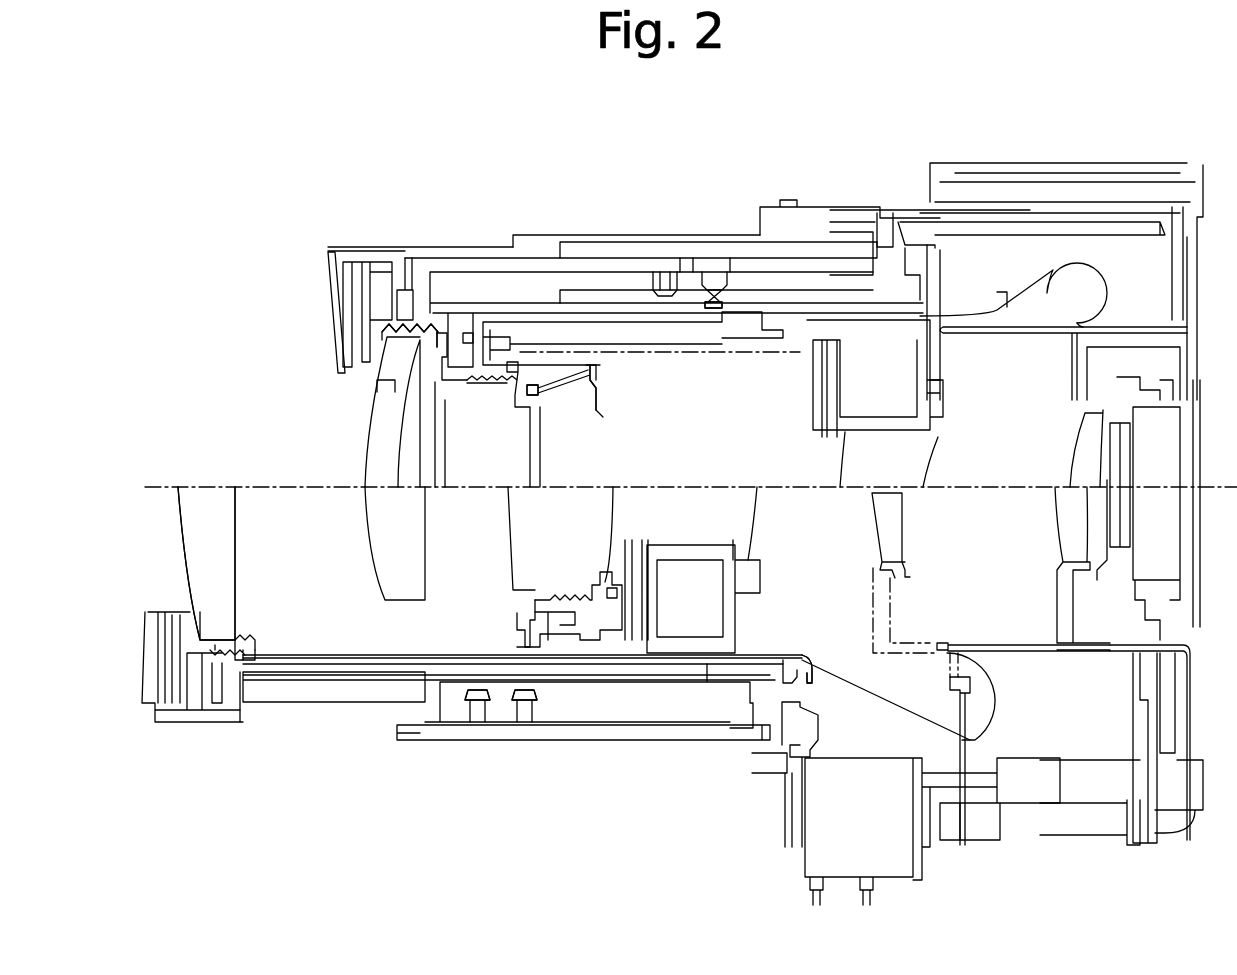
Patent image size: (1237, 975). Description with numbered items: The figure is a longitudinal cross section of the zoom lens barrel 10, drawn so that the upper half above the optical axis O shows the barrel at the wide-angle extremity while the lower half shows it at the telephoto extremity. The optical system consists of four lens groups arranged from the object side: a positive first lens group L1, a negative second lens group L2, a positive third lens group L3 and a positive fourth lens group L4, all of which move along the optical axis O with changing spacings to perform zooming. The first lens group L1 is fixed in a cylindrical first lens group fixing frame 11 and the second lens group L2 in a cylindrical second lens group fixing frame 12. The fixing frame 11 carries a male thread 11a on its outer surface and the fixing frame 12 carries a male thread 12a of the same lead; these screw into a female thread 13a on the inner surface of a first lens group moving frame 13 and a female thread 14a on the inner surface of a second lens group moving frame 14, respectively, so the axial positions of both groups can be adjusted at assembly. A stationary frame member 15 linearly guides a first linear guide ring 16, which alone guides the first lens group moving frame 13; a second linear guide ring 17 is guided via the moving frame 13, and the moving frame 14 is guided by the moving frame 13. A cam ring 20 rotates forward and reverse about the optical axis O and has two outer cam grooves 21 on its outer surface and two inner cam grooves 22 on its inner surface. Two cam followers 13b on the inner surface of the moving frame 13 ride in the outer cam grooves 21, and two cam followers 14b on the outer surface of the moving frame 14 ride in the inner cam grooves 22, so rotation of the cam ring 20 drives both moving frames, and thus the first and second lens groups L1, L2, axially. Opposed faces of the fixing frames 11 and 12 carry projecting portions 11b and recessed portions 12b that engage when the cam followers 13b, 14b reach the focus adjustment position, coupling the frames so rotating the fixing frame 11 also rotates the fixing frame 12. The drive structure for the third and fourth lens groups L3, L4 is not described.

The zoom lens barrel 10 is at (212, 138).
The first lens group fixing frame 11 is at (410, 365).
The male thread 11a is at (377, 392).
The projecting portions 11b is at (395, 380).
The second lens group fixing frame 12 is at (520, 400).
The male thread 12a is at (537, 376).
The recessed portions 12b is at (450, 333).
The first lens group moving frame 13 is at (477, 270).
The female thread 13a is at (410, 335).
The cam followers 13b is at (501, 695).
The second lens group moving frame 14 is at (668, 320).
The female thread 14a is at (561, 387).
The cam followers 14b is at (758, 492).
The stationary frame member 15 is at (848, 216).
The first linear guide ring 16 is at (568, 236).
The second linear guide ring 17 is at (372, 247).
The cam ring 20 is at (787, 280).
The outer cam grooves 21 is at (707, 278).
The inner cam grooves 22 is at (718, 290).
The optical axis O is at (312, 487).
The first lens group L1 is at (233, 546).
The second lens group L2 is at (512, 503).
The third lens group L3 is at (936, 458).
The fourth lens group L4 is at (1073, 442).